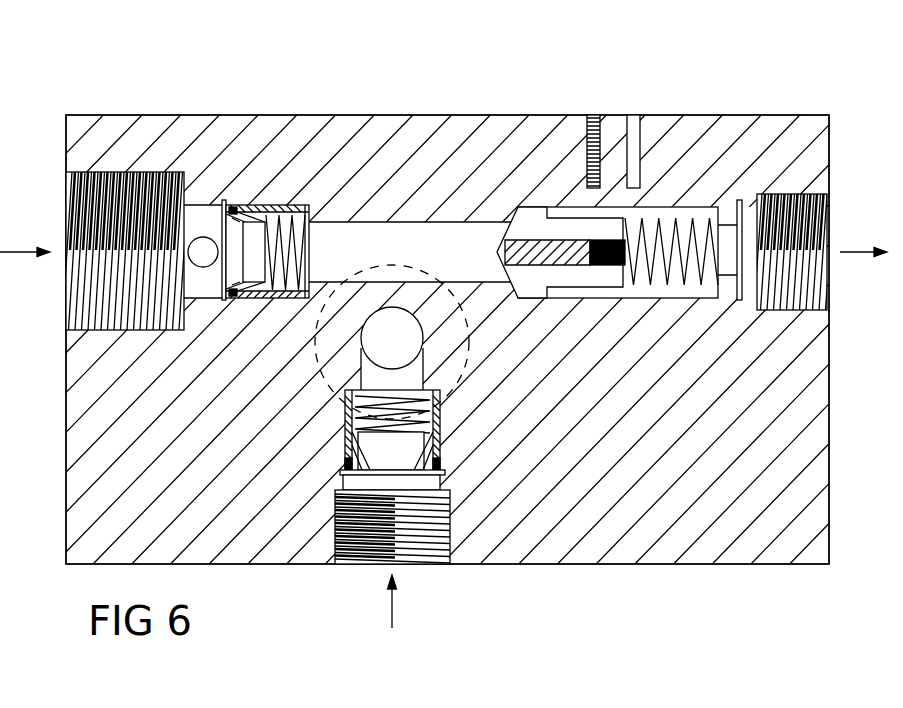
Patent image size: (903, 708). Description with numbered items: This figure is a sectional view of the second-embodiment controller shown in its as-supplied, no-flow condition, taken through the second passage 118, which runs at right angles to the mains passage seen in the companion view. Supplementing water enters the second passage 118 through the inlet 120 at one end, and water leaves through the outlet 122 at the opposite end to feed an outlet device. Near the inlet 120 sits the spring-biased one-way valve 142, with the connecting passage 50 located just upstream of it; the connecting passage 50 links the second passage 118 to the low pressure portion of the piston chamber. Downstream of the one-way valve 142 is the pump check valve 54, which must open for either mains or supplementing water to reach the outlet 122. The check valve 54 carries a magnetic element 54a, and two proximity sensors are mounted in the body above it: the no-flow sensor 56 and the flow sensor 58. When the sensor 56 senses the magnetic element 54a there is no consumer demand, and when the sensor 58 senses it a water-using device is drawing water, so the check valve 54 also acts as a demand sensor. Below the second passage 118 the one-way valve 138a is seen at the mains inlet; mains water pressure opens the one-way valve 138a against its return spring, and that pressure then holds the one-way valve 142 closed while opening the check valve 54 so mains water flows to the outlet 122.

The connecting passage 50 is at (208, 236).
The pump check valve 54 is at (536, 217).
The magnetic element 54a is at (600, 240).
The no flow proximity sensor 56 is at (595, 113).
The flow proximity sensor 58 is at (637, 112).
The second passage 118 is at (423, 236).
The inlet 120 is at (110, 288).
The outlet 122 is at (803, 226).
The one-way valve 138a is at (400, 459).
The one-way valve 142 is at (250, 240).